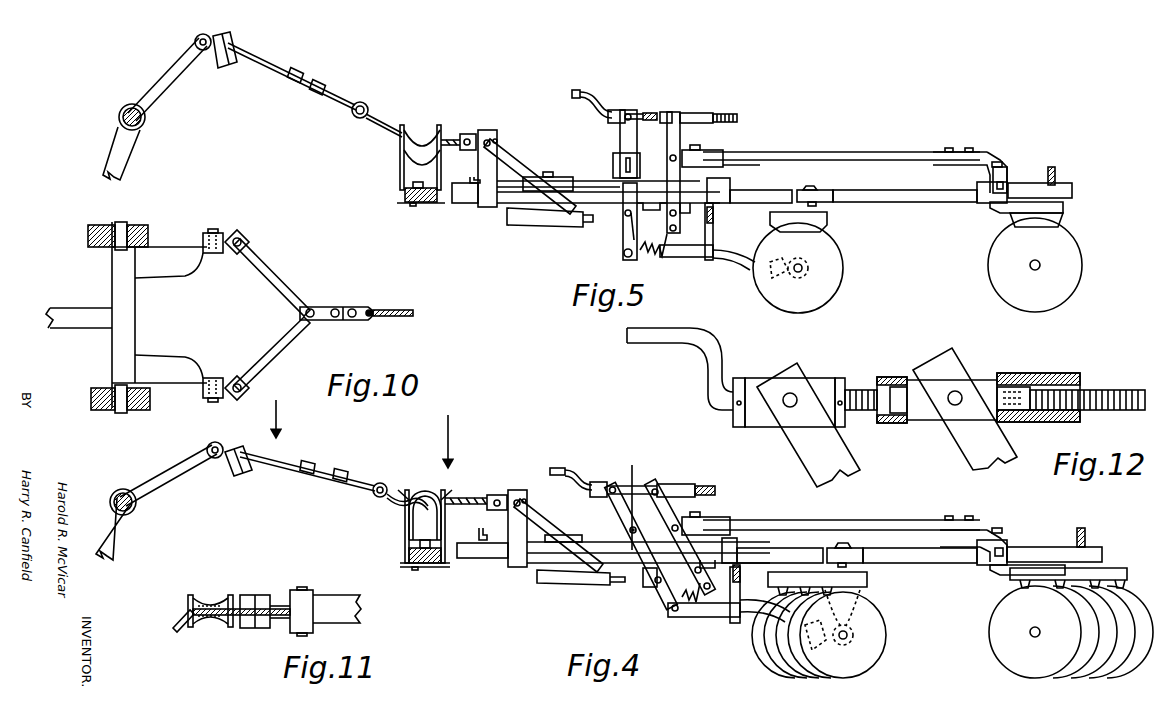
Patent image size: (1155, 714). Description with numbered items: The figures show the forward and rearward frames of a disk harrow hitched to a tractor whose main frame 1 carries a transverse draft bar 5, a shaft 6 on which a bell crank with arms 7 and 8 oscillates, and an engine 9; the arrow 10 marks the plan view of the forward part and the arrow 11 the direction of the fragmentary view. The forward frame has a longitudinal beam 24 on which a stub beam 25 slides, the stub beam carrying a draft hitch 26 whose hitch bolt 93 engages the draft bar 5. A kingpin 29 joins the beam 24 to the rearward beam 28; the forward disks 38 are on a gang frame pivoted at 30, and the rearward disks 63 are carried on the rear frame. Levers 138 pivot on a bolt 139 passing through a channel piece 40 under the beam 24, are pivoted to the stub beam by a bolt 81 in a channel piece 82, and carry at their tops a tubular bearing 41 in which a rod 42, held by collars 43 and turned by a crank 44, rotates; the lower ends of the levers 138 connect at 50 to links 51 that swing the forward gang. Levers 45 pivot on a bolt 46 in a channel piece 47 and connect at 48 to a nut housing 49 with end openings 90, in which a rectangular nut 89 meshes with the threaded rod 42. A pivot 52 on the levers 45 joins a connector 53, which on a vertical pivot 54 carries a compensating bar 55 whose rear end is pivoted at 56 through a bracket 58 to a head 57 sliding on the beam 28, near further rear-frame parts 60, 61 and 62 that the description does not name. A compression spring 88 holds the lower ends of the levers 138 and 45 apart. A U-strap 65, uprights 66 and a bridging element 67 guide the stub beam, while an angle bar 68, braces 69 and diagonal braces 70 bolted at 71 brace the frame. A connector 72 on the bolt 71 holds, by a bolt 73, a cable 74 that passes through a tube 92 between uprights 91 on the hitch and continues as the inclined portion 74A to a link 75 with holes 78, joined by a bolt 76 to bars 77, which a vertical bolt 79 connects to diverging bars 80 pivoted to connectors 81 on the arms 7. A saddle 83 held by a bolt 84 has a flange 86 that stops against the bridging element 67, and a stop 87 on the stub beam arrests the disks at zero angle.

In FIG. 10, the main frame 1 is at (140, 232).
In FIG. 5, the transverse draft bar 5 is at (400, 197).
In FIG. 4, the transverse draft bar 5 is at (405, 560).
In FIG. 10, the shaft 6 is at (118, 400).
In FIG. 4, the shaft 6 is at (134, 510).
In FIG. 10, the bell crank arm 7 is at (178, 266).
In FIG. 4, the bell crank arm 7 is at (170, 478).
In FIG. 10, the bell crank arm 8 is at (90, 322).
In FIG. 4, the bell crank arm 8 is at (112, 531).
In FIG. 4, the engine 9 is at (632, 470).
In FIG. 4, the section line 10 is at (284, 419).
In FIG. 4, the arrow 11 is at (441, 441).
In FIG. 5, the longitudinal beam 24 is at (758, 192).
In FIG. 4, the longitudinal beam 24 is at (780, 552).
In FIG. 5, the stub beam 25 is at (462, 199).
In FIG. 4, the stub beam 25 is at (465, 557).
In FIG. 5, the draft hitch 26 is at (432, 204).
In FIG. 4, the draft hitch 26 is at (440, 568).
In FIG. 5, the longitudinal beam 28 is at (880, 190).
In FIG. 4, the longitudinal beam 28 is at (903, 548).
In FIG. 5, the kingpin 29 is at (812, 188).
In FIG. 4, the kingpin 29 is at (848, 548).
In FIG. 4, the pivot connection 30 is at (832, 645).
In FIG. 5, the forward disks 38 is at (843, 290).
In FIG. 4, the forward disks 38 is at (888, 637).
In FIG. 5, the channel-shaped piece 40 is at (622, 230).
In FIG. 4, the channel-shaped piece 40 is at (646, 584).
In FIG. 5, the tubular bearing 41 is at (631, 111).
In FIG. 12, the tubular bearing 41 is at (825, 380).
In FIG. 4, the tubular bearing 41 is at (608, 487).
In FIG. 5, the round rod 42 is at (650, 113).
In FIG. 12, the round rod 42 is at (858, 390).
In FIG. 4, the round rod 42 is at (712, 487).
In FIG. 5, the collars 43 is at (609, 119).
In FIG. 12, the collars 43 is at (738, 380).
In FIG. 4, the collars 43 is at (598, 489).
In FIG. 5, the handle or crank 44 is at (584, 92).
In FIG. 12, the handle or crank 44 is at (660, 338).
In FIG. 4, the handle or crank 44 is at (558, 476).
In FIG. 5, the levers 45 is at (680, 133).
In FIG. 12, the levers 45 is at (1015, 442).
In FIG. 4, the levers 45 is at (668, 508).
In FIG. 5, the bolt 46 is at (684, 215).
In FIG. 4, the bolt 46 is at (690, 578).
In FIG. 5, the channel piece 47 is at (652, 208).
In FIG. 4, the channel piece 47 is at (708, 559).
In FIG. 5, the pivot connection 48 is at (672, 112).
In FIG. 12, the pivot connection 48 is at (959, 404).
In FIG. 4, the pivot connection 48 is at (668, 489).
In FIG. 5, the nut housing 49 is at (700, 113).
In FIG. 12, the nut housing 49 is at (1040, 373).
In FIG. 4, the nut housing 49 is at (657, 489).
In FIG. 5, the pivot connection 50 is at (627, 258).
In FIG. 4, the pivot connection 50 is at (674, 613).
In FIG. 5, the links 51 is at (684, 257).
In FIG. 4, the links 51 is at (709, 611).
In FIG. 5, the pivot connection 52 is at (670, 160).
In FIG. 4, the pivot connection 52 is at (678, 528).
In FIG. 5, the connector 53 is at (717, 156).
In FIG. 4, the connector 53 is at (715, 520).
In FIG. 5, the vertical pivot 54 is at (700, 147).
In FIG. 4, the vertical pivot 54 is at (702, 513).
In FIG. 5, the compensating bar 55 is at (775, 153).
In FIG. 4, the compensating bar 55 is at (770, 521).
In FIG. 5, the pivot connection 56 is at (1003, 162).
In FIG. 4, the pivot connection 56 is at (1003, 531).
In FIG. 5, the head 57 is at (978, 200).
In FIG. 4, the head 57 is at (980, 566).
In FIG. 5, the bracket 58 is at (962, 165).
In FIG. 4, the bracket 58 is at (965, 532).
In FIG. 5, the bracket 60 is at (1007, 176).
In FIG. 4, the bracket 60 is at (1008, 541).
In FIG. 5, the hub bracket 61 is at (1040, 216).
In FIG. 4, the hub bracket 61 is at (1038, 581).
In FIG. 5, the bracket 62 is at (1000, 210).
In FIG. 4, the bracket 62 is at (1005, 574).
In FIG. 5, the rearward disks 63 is at (1082, 262).
In FIG. 4, the rearward disks 63 is at (992, 658).
In FIG. 5, the strap 65 is at (730, 183).
In FIG. 4, the strap 65 is at (738, 546).
In FIG. 5, the uprights 66 is at (498, 140).
In FIG. 4, the uprights 66 is at (526, 501).
In FIG. 5, the bridging element 67 is at (478, 161).
In FIG. 4, the bridging element 67 is at (517, 528).
In FIG. 5, the transverse angle bar 68 is at (714, 212).
In FIG. 4, the transverse angle bar 68 is at (741, 576).
In FIG. 5, the braces 69 is at (548, 228).
In FIG. 4, the braces 69 is at (580, 585).
In FIG. 5, the diagonal braces 70 is at (523, 164).
In FIG. 4, the diagonal braces 70 is at (535, 517).
In FIG. 5, the bolt 71 is at (488, 140).
In FIG. 4, the bolt 71 is at (518, 499).
In FIG. 5, the connector 72 is at (468, 139).
In FIG. 4, the connector 72 is at (497, 499).
In FIG. 5, the horizontal bolt 73 is at (462, 135).
In FIG. 4, the horizontal bolt 73 is at (490, 495).
In FIG. 5, the cable 74 is at (450, 146).
In FIG. 4, the cable 74 is at (466, 492).
In FIG. 11, the cable part 74A is at (182, 629).
In FIG. 4, the cable part 74A is at (400, 495).
In FIG. 10, the link 75 is at (370, 308).
In FIG. 4, the link 75 is at (363, 483).
In FIG. 10, the bolt 76 is at (335, 318).
In FIG. 4, the bolt 76 is at (343, 469).
In FIG. 10, the bars 77 is at (330, 307).
In FIG. 4, the bars 77 is at (322, 466).
In FIG. 10, the holes 78 is at (354, 318).
In FIG. 10, the vertical bolt 79 is at (311, 308).
In FIG. 4, the vertical bolt 79 is at (304, 472).
In FIG. 10, the diverging bars 80 is at (268, 262).
In FIG. 5, the bolt 81 is at (626, 168).
In FIG. 10, the bolt 81 is at (232, 233).
In FIG. 4, the bolt 81 is at (220, 443).
In FIG. 5, the channel piece 82 is at (613, 158).
In FIG. 5, the saddle 83 is at (575, 185).
In FIG. 4, the saddle 83 is at (575, 535).
In FIG. 5, the bolt 84 is at (563, 177).
In FIG. 5, the flange 86 is at (548, 172).
In FIG. 5, the stop 87 is at (470, 179).
In FIG. 4, the stop 87 is at (478, 526).
In FIG. 5, the compression spring 88 is at (653, 252).
In FIG. 12, the nut 89 is at (1013, 373).
In FIG. 12, the end openings 90 is at (880, 377).
In FIG. 4, the uprights 91 is at (409, 524).
In FIG. 4, the tube 92 is at (426, 495).
In FIG. 4, the hitch bolt 93 is at (425, 540).
In FIG. 5, the levers 138 is at (620, 140).
In FIG. 12, the levers 138 is at (852, 460).
In FIG. 4, the levers 138 is at (600, 536).
In FIG. 5, the bolt 139 is at (636, 222).
In FIG. 4, the bolt 139 is at (664, 604).